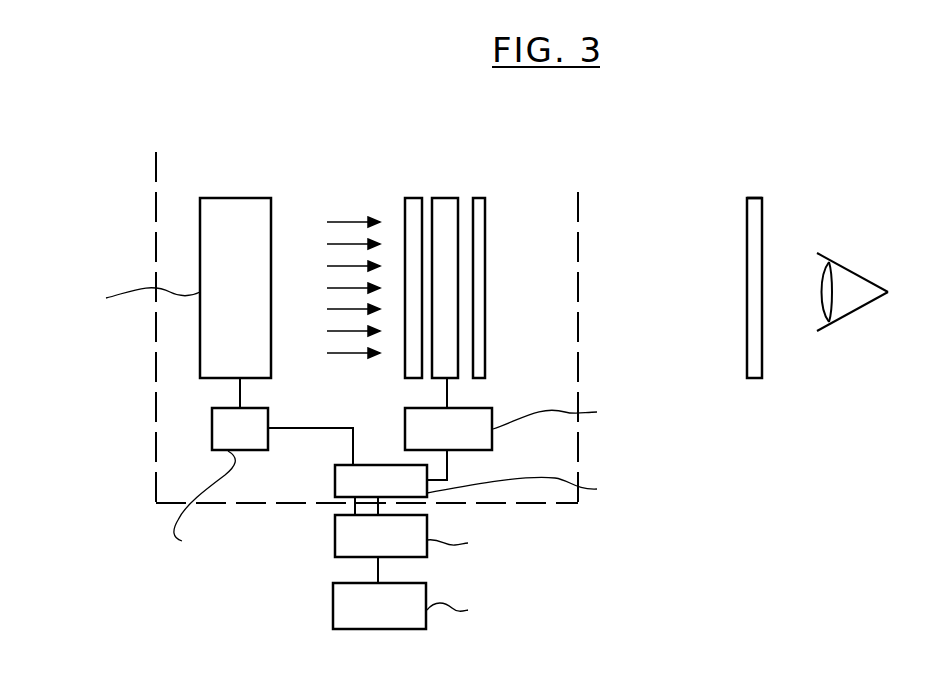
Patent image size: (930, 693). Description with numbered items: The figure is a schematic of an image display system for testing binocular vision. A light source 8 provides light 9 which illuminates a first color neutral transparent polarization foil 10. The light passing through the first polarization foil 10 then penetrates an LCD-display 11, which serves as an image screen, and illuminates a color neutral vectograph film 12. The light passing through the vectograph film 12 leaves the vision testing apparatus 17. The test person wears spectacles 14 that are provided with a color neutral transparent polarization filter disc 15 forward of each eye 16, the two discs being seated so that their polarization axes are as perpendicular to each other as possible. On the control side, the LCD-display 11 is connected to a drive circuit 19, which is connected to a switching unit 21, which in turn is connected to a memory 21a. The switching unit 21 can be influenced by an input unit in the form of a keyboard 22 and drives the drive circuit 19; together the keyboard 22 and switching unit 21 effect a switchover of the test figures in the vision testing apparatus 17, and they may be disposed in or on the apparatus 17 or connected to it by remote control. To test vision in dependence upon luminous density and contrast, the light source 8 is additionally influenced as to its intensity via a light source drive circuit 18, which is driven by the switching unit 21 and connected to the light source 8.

The light source 8 is at (234, 206).
The light 9 is at (352, 222).
The first color neutral transparent polarization foil 10 is at (414, 206).
The LCD-display 11 is at (445, 206).
The color neutral vectograph film 12 is at (478, 206).
The spectacles 14 is at (746, 195).
The polarization filter disc 15 is at (757, 197).
The eye 16 is at (850, 287).
The vision testing apparatus 17 is at (155, 204).
The light source drive circuit 18 is at (263, 492).
The drive circuit 19 is at (532, 441).
The memory 21a is at (504, 481).
The switching unit 21 is at (448, 540).
The keyboard 22 is at (445, 606).